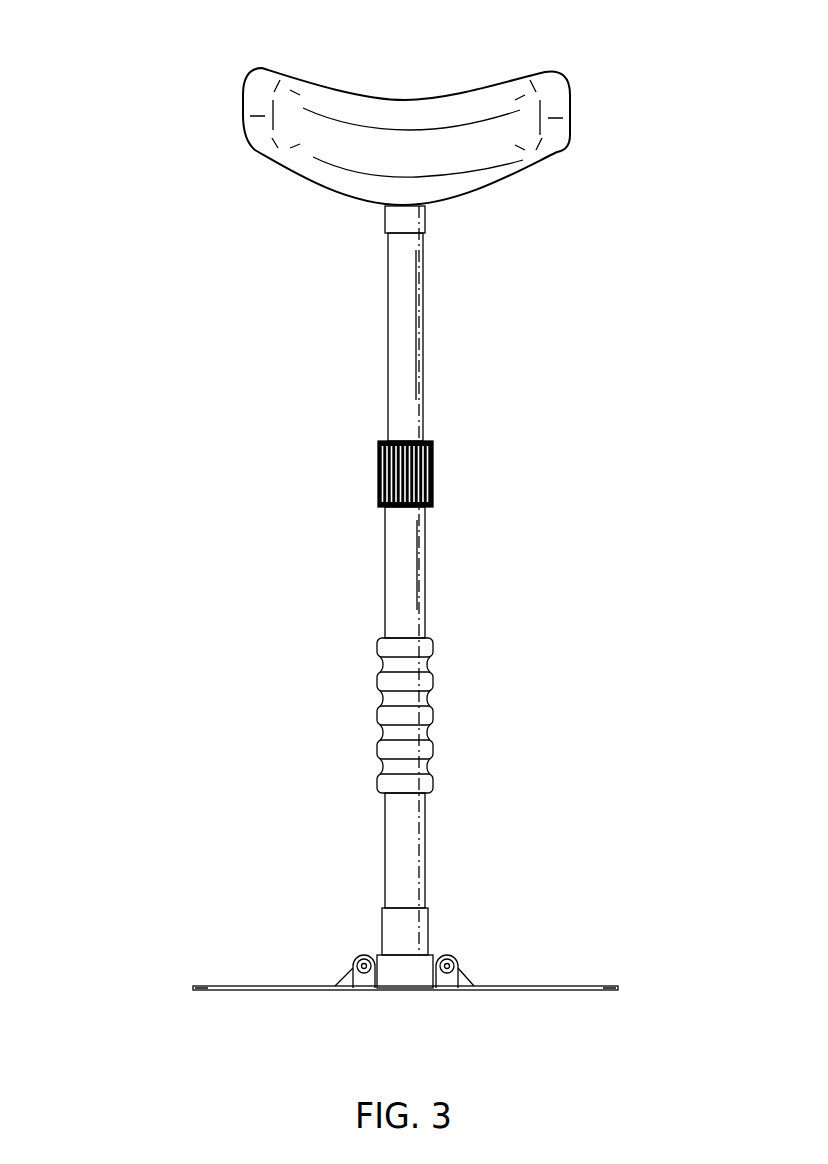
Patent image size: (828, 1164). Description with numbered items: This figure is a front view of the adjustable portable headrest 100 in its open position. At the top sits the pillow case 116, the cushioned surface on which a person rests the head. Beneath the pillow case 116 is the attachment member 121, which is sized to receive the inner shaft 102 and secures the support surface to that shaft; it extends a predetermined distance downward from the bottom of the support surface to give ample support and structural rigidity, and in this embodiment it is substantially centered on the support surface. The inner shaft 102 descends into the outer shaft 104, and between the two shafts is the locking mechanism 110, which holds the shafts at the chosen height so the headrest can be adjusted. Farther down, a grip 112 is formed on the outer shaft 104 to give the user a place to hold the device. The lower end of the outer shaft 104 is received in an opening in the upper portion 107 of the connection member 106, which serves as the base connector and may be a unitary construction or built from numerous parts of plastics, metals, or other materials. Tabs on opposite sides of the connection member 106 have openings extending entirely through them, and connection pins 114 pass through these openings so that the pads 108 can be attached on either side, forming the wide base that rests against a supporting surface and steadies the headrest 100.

The adjustable portable headrest 100 is at (182, 46).
The pillow case 116 is at (570, 123).
The attachment member 121 is at (425, 218).
The inner shaft 102 is at (423, 335).
The locking mechanism 110 is at (433, 463).
The outer shaft 104 is at (425, 560).
The grip 112 is at (433, 680).
The upper portion 107 is at (428, 923).
The connection member 106 is at (365, 971).
The connection pins 114 is at (447, 973).
The pads 108 is at (242, 990).